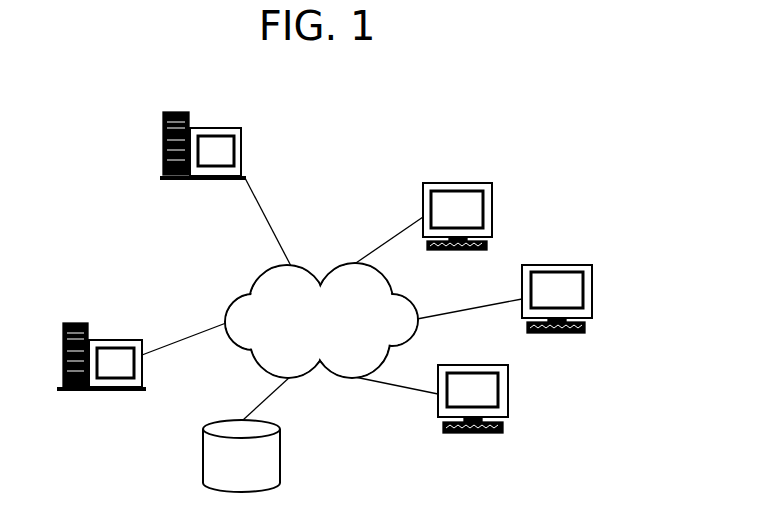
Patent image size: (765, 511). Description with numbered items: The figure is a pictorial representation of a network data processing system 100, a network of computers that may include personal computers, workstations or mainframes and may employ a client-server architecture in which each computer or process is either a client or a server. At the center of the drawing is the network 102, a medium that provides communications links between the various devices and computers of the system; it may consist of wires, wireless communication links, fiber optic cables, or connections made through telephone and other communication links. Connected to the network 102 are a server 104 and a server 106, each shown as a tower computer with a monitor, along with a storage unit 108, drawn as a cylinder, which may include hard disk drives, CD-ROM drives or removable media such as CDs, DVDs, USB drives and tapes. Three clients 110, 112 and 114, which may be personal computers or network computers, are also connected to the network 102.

The network data processing system 100 is at (457, 86).
The network 102 is at (305, 317).
The server 104 is at (117, 340).
The server 106 is at (215, 128).
The storage unit 108 is at (280, 457).
The client 110 is at (455, 183).
The client 112 is at (560, 265).
The client 114 is at (508, 398).